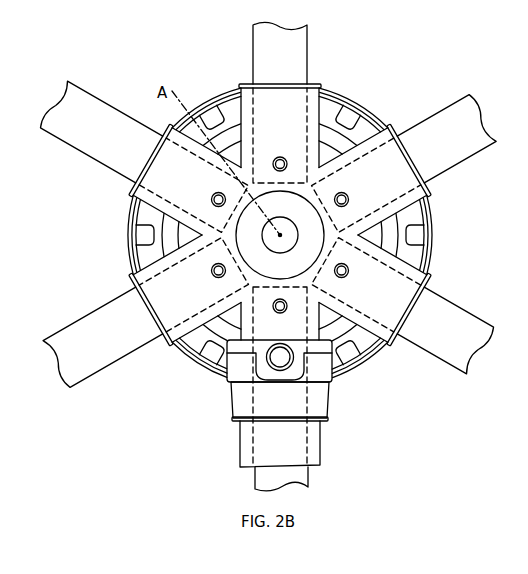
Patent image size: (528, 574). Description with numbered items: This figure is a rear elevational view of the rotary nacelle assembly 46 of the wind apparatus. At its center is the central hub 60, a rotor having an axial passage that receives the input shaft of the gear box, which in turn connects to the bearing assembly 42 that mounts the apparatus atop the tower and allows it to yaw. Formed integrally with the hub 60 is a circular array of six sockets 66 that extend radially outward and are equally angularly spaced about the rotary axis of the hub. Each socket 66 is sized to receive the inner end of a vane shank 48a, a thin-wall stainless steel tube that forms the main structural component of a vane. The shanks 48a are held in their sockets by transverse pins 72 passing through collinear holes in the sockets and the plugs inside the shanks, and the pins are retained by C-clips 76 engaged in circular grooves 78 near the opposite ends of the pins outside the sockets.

The bearing assembly 42 is at (338, 449).
The rotary nacelle assembly 46 is at (104, 221).
The vane shanks 48a is at (310, 42).
The central hub 60 is at (312, 213).
The sockets 66 is at (386, 127).
The transverse pins 72 is at (212, 271).
The C-clips 76 is at (212, 266).
The circular grooves 78 is at (279, 157).